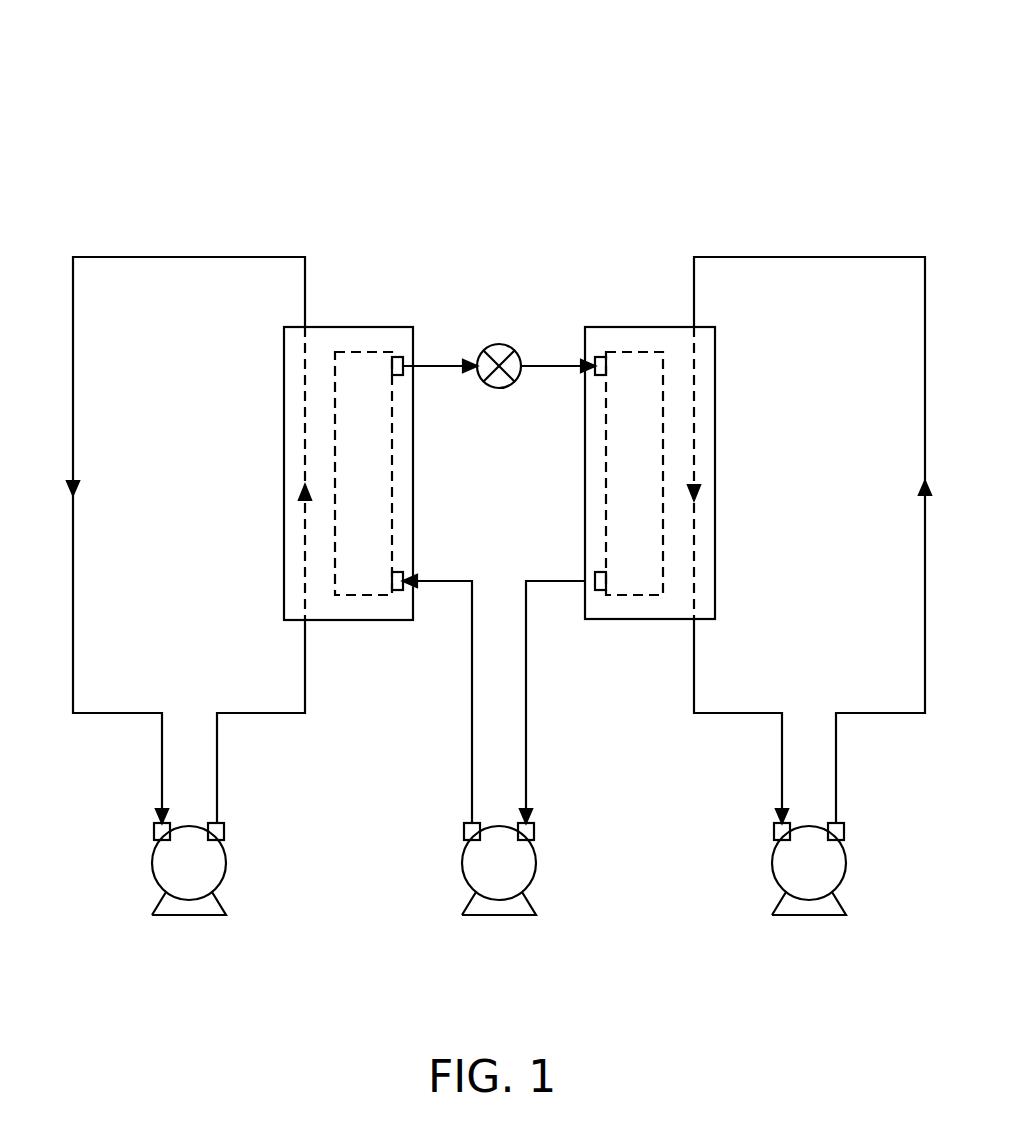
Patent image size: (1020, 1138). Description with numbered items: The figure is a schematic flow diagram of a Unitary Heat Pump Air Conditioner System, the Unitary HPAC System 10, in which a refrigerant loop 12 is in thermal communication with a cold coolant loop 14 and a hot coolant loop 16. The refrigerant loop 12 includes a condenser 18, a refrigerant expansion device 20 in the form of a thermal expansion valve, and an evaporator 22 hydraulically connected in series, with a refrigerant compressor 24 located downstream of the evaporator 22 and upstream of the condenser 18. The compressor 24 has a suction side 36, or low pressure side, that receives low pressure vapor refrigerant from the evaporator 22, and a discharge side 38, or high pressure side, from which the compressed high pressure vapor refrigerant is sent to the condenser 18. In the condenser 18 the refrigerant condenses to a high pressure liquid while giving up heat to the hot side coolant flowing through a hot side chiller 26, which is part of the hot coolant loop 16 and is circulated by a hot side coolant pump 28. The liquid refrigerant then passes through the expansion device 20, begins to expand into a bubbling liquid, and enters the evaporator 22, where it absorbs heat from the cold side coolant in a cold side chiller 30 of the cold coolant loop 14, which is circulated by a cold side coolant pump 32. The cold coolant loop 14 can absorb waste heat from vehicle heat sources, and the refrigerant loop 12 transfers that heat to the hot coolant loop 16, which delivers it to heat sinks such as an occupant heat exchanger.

The Unitary HPAC System 10 is at (641, 118).
The refrigerant loop 12 is at (509, 721).
The cold coolant loop 14 is at (873, 238).
The hot coolant loop 16 is at (127, 238).
The condenser 18 is at (374, 365).
The refrigerant expansion device 20 is at (497, 347).
The evaporator 22 is at (625, 365).
The refrigerant compressor 24 is at (520, 870).
The hot side chiller 26 is at (327, 338).
The hot side coolant pump 28 is at (212, 870).
The cold side chiller 30 is at (670, 338).
The cold side coolant pump 32 is at (832, 870).
The suction side 36 is at (526, 755).
The discharge side 38 is at (472, 755).